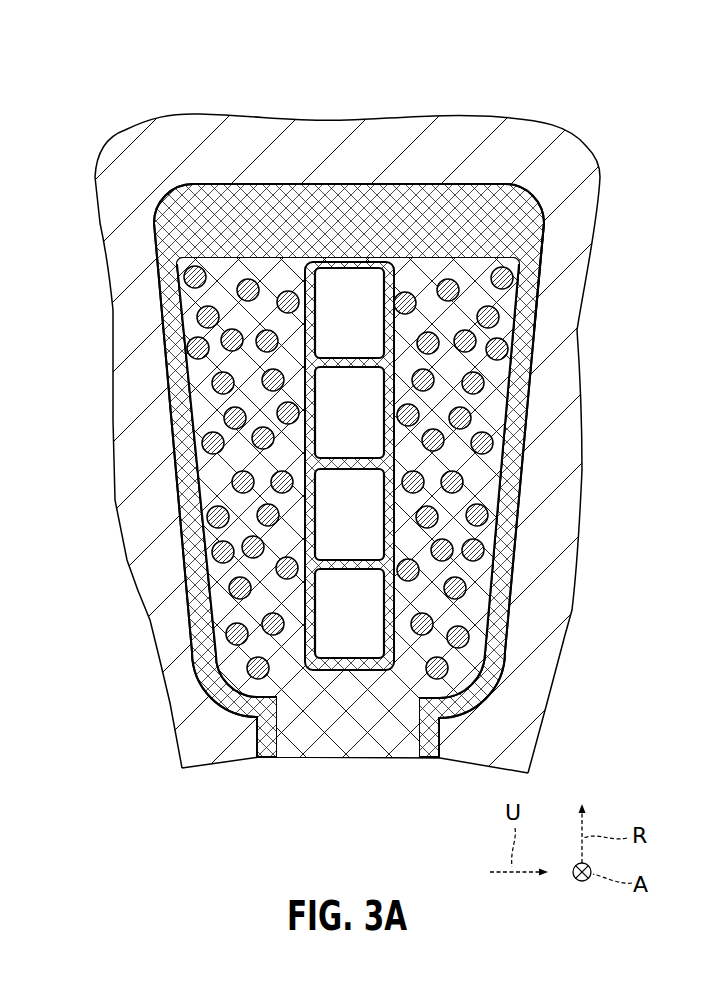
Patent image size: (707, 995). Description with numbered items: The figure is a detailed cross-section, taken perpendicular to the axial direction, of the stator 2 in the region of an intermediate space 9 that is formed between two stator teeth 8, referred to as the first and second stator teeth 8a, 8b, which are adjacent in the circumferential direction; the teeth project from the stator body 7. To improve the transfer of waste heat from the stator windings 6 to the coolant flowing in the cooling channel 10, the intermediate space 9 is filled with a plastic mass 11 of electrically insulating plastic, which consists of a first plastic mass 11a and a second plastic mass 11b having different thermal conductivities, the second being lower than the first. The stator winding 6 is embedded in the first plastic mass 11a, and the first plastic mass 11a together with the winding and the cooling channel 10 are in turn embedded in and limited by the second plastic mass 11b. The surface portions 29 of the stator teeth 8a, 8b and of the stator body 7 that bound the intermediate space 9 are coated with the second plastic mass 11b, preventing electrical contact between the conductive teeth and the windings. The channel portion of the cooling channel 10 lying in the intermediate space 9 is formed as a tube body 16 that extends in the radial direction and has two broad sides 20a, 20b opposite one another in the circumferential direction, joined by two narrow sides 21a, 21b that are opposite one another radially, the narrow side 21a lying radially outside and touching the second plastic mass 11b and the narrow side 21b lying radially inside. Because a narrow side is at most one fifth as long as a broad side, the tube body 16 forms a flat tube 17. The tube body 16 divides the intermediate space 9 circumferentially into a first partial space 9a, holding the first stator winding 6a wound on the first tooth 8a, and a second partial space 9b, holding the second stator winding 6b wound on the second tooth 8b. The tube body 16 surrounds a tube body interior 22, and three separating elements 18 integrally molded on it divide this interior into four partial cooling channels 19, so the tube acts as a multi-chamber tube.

The stator 2 is at (355, 447).
The stator winding 6 is at (348, 438).
The first stator winding 6a is at (163, 342).
The second stator winding 6b is at (537, 343).
The stator body 7 is at (347, 417).
The stator teeth 8 is at (347, 475).
The first stator tooth 8a is at (147, 598).
The second stator tooth 8b is at (547, 643).
The intermediate space 9 is at (347, 481).
The first partial space 9a is at (213, 470).
The second partial space 9b is at (482, 473).
The cooling channel 10 is at (368, 744).
The plastic mass 11 is at (355, 450).
The first plastic mass 11a is at (478, 299).
The second plastic mass 11b is at (255, 223).
The tube body 16 is at (368, 744).
The flat tube 17 is at (378, 660).
The separating elements 18 is at (347, 507).
The partial cooling channels 19 is at (361, 321).
The broad side 20a is at (267, 512).
The broad side 20b is at (420, 512).
The narrow side 21a is at (343, 262).
The narrow side 21b is at (337, 670).
The tube body interior 22 is at (478, 712).
The surface portions 29 is at (413, 197).